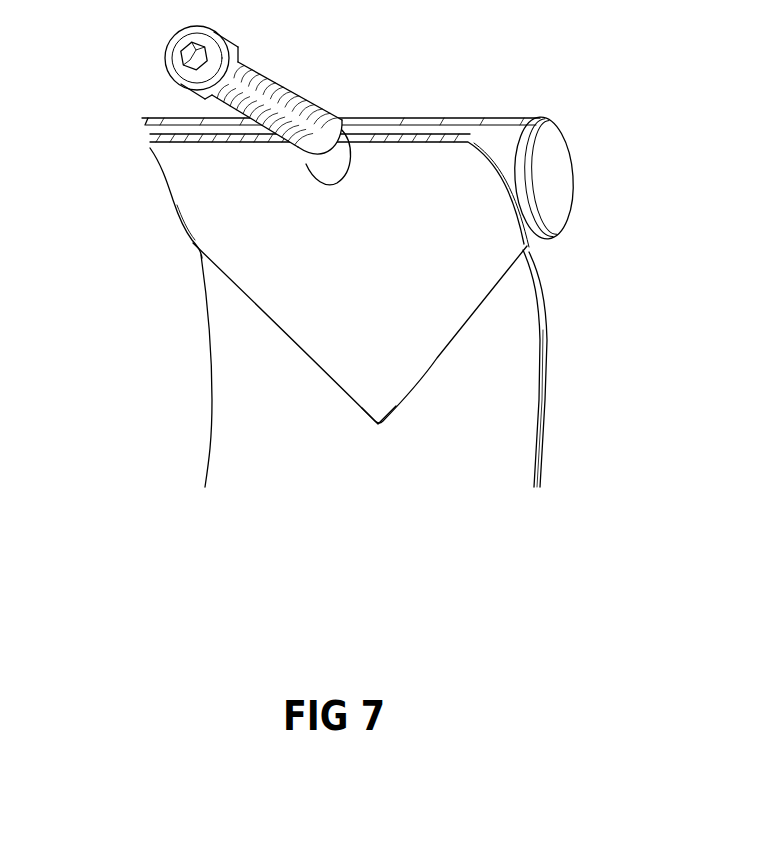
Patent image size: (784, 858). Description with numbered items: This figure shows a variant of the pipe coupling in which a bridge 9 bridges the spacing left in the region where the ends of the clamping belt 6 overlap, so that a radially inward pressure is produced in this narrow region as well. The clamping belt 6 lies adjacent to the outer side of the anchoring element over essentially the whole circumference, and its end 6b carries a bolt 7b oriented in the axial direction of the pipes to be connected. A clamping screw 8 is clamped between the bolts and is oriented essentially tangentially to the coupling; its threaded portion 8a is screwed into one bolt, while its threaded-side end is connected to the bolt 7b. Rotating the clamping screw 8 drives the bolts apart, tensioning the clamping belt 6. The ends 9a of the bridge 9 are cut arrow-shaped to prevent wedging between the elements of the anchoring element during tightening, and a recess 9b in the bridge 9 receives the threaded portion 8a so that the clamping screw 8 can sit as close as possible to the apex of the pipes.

The clamping belt 6 is at (237, 450).
The end of clamping belt 6b is at (440, 118).
The bolt 7b is at (558, 187).
The clamping screw 8 is at (208, 81).
The threaded portion 8a is at (278, 108).
The bridge 9 is at (288, 248).
The ends of the bridge 9a is at (378, 404).
The recess 9b is at (322, 168).